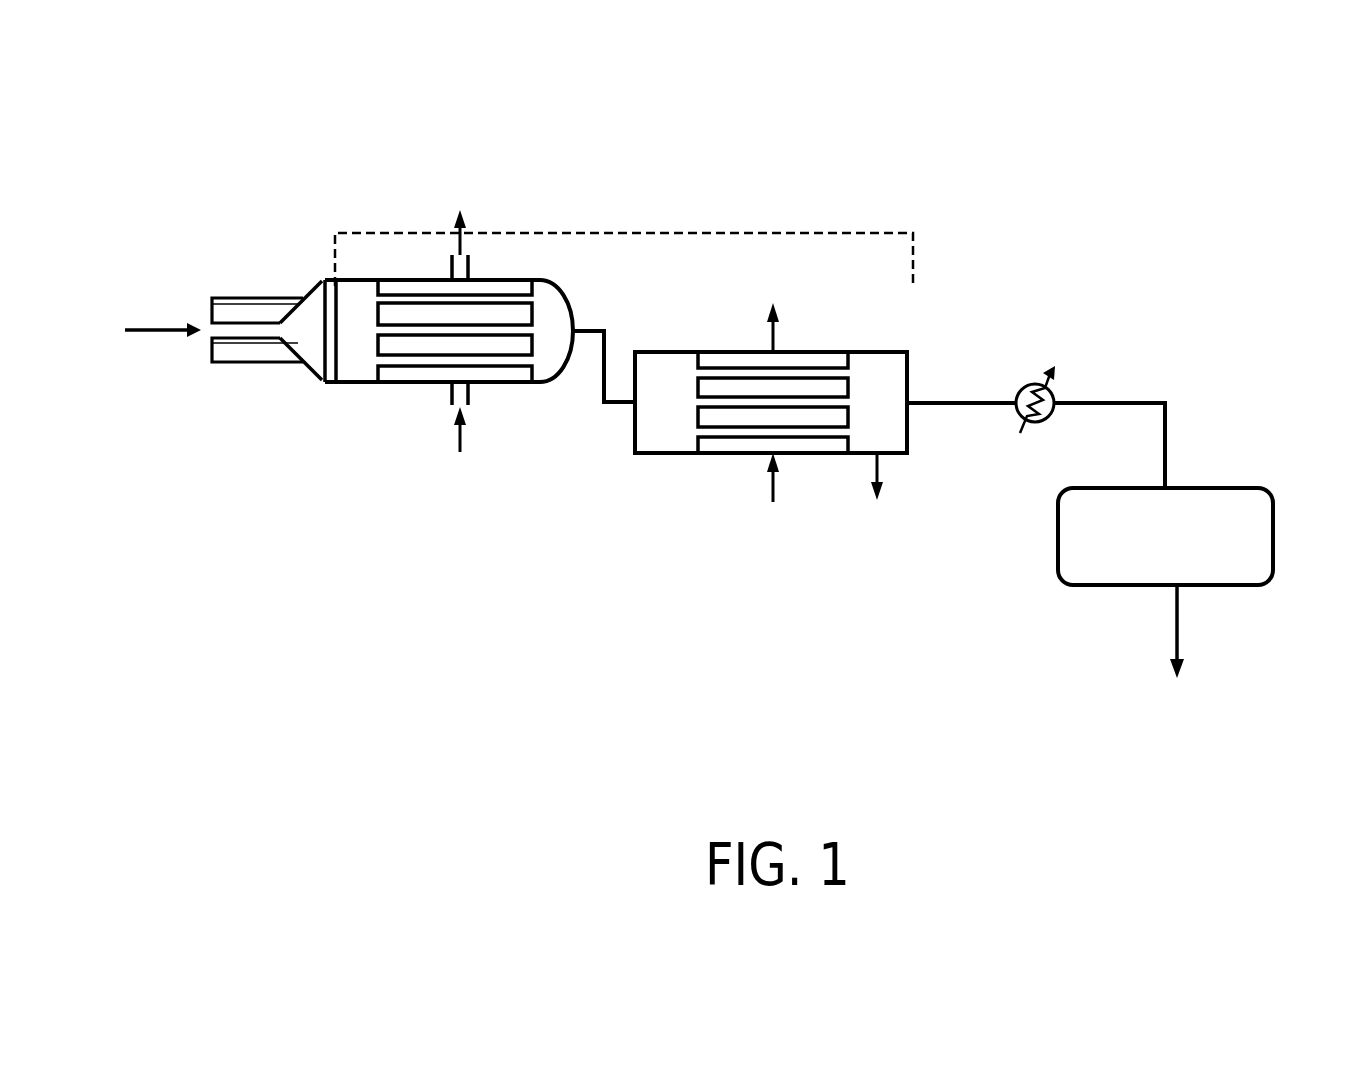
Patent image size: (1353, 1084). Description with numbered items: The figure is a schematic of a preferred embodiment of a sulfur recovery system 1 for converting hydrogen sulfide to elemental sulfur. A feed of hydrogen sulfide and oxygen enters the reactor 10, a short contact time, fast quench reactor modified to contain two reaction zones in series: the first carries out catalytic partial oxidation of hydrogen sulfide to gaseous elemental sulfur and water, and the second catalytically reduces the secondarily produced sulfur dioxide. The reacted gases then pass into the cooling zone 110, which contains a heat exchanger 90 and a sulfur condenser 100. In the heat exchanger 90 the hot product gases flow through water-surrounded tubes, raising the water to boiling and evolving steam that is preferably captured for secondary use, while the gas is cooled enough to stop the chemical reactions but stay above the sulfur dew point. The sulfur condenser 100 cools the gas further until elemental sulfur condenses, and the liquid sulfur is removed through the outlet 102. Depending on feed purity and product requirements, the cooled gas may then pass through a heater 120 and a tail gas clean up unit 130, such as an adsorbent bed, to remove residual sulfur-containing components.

The sulfur recovery system 1 is at (936, 198).
The reactor 10 is at (268, 354).
The heat exchanger 90 is at (454, 337).
The sulfur condenser 100 is at (804, 403).
The outlet 102 is at (882, 460).
The cooling zone 110 is at (624, 230).
The heater 120 is at (1079, 390).
The tail gas clean up unit 130 is at (1199, 542).